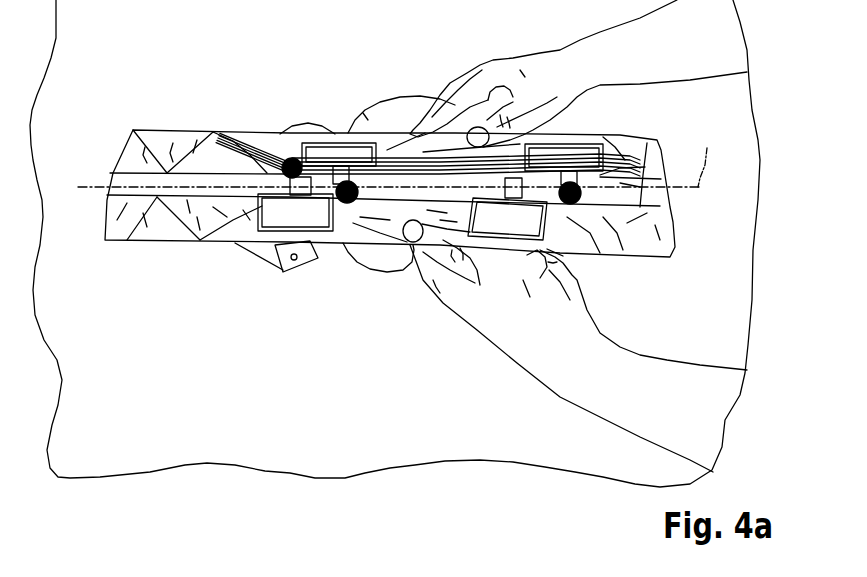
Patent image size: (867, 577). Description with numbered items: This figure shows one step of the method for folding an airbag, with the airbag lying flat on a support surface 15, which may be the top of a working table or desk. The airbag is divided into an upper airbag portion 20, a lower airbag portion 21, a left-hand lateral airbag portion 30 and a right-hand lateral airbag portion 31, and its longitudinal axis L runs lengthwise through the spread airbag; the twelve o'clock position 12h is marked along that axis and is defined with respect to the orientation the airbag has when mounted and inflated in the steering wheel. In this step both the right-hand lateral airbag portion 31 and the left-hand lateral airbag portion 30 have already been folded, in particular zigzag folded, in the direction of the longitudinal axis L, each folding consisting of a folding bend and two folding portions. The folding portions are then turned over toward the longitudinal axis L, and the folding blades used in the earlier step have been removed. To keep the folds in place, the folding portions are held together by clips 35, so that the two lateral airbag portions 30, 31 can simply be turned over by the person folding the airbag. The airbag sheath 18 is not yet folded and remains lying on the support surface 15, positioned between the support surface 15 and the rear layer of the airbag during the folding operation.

The twelve o'clock position 12h is at (372, 186).
The support surface 15 is at (138, 405).
The airbag sheath 18 is at (399, 94).
The upper airbag portion 20 is at (390, 177).
The lower airbag portion 21 is at (641, 195).
The left-hand lateral airbag portion 30 is at (376, 272).
The right-hand lateral airbag portion 31 is at (428, 116).
The clips 35 is at (432, 193).
The longitudinal axis L is at (706, 155).